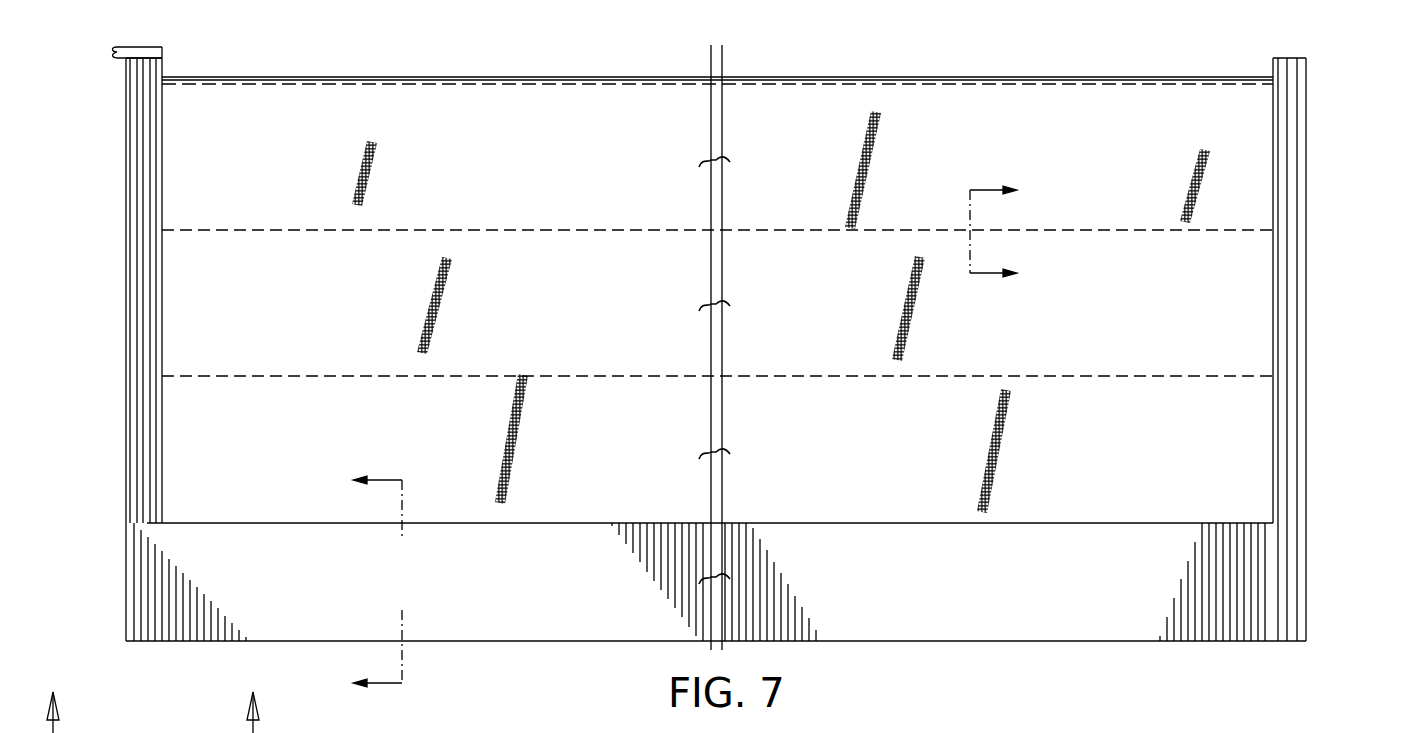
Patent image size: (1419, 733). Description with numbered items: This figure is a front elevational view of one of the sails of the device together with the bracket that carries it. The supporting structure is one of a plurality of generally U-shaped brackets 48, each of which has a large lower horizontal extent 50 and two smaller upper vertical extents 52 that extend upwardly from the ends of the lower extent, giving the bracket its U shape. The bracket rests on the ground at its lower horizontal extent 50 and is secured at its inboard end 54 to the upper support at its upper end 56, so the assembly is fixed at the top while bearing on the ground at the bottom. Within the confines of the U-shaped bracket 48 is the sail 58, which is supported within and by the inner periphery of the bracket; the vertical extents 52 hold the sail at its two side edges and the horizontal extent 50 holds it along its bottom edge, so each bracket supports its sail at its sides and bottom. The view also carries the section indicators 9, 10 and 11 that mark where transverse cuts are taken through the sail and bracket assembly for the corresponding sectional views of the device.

The U-shaped bracket 48 is at (126, 600).
The lower horizontal extent 50 is at (248, 606).
The upper vertical extent 52 is at (137, 305).
The inboard end 54 is at (131, 377).
The upper end 56 is at (163, 63).
The sail 58 is at (482, 120).
The section line 9- 9 is at (1005, 233).
The section line 10- 10 is at (360, 583).
The section line 11- 11 is at (160, 696).